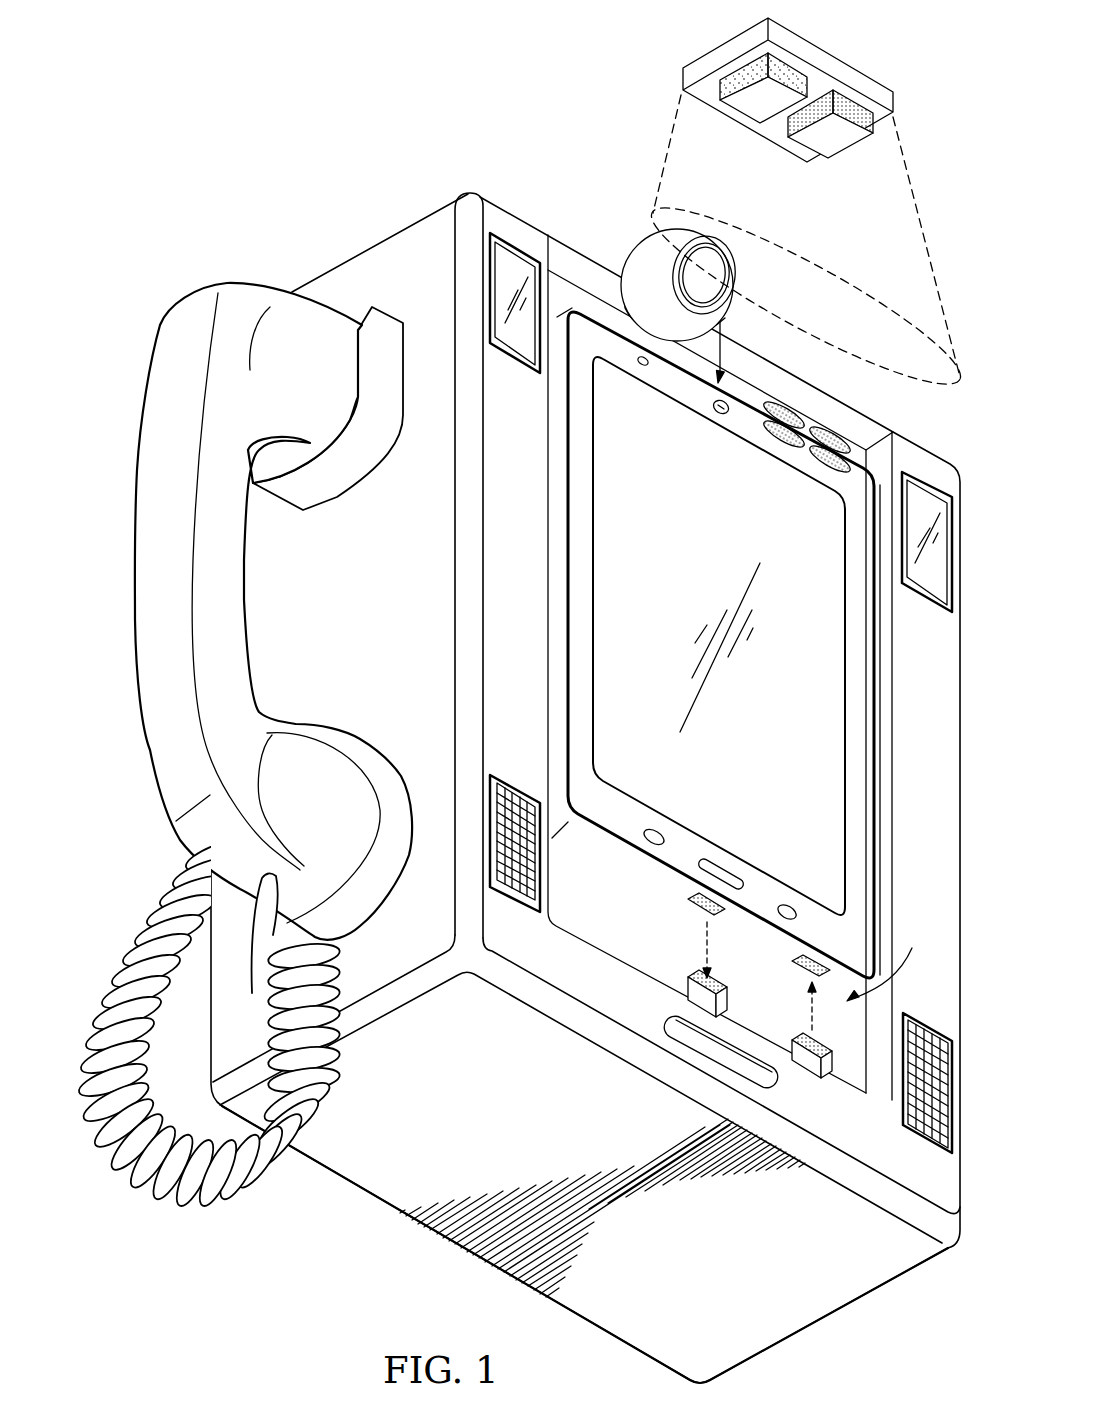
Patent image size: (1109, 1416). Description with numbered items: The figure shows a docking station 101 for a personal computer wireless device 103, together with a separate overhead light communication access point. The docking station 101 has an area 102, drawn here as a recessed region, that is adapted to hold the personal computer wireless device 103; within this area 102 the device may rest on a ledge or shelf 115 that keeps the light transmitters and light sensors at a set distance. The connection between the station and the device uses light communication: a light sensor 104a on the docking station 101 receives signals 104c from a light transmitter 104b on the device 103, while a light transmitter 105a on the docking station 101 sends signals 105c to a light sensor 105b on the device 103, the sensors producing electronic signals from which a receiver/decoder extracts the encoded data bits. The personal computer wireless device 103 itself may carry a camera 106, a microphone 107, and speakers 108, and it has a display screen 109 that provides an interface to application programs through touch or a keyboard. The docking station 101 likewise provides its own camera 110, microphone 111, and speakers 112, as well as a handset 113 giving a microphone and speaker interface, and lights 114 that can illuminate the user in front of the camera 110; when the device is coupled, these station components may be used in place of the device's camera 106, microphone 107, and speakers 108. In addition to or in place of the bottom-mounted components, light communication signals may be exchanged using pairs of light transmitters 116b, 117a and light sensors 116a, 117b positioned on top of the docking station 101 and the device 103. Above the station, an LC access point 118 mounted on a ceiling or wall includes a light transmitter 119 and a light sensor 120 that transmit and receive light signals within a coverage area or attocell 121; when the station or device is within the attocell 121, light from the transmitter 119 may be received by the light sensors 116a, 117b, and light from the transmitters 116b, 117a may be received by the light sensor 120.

The docking station 101 is at (406, 214).
The area 102 is at (564, 288).
The personal computer wireless device 103 is at (722, 372).
The light sensor 104a is at (688, 990).
The light transmitter 104b is at (688, 906).
The signals 104c is at (706, 925).
The light transmitter 105a is at (800, 1036).
The light sensor 105b is at (808, 952).
The signals 105c is at (815, 1013).
The camera 106 is at (721, 414).
The microphone 107 is at (644, 367).
The speakers 108 is at (657, 828).
The display screen 109 is at (670, 610).
The camera 110 is at (658, 236).
The microphone 111 is at (668, 1034).
The speakers 112 is at (518, 790).
The handset 113 is at (192, 296).
The lights 114 is at (522, 238).
The ledge or shelf 115 is at (897, 771).
The light sensor 116a is at (787, 402).
The light transmitter 116b is at (780, 444).
The light transmitter 117a is at (834, 430).
The light sensor 117b is at (826, 470).
The LC access point 118 is at (828, 53).
The light transmitter 119 is at (803, 160).
The light sensor 120 is at (740, 114).
The attocell 121 is at (912, 172).